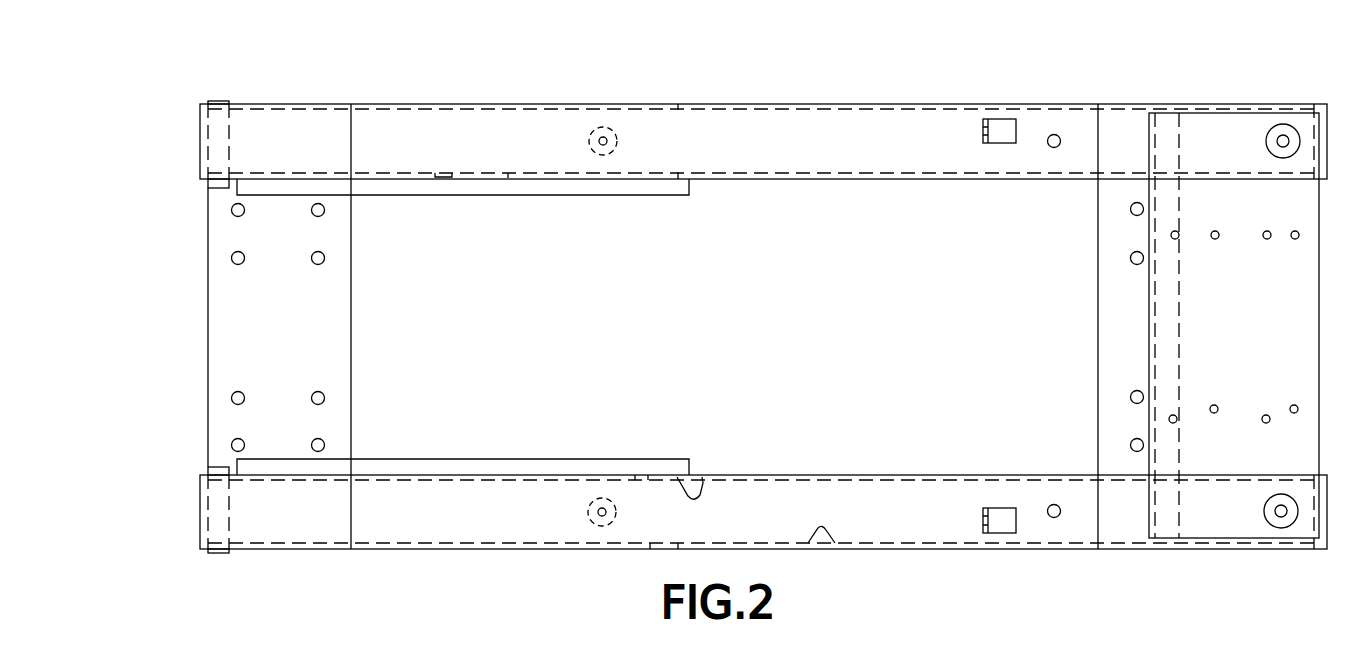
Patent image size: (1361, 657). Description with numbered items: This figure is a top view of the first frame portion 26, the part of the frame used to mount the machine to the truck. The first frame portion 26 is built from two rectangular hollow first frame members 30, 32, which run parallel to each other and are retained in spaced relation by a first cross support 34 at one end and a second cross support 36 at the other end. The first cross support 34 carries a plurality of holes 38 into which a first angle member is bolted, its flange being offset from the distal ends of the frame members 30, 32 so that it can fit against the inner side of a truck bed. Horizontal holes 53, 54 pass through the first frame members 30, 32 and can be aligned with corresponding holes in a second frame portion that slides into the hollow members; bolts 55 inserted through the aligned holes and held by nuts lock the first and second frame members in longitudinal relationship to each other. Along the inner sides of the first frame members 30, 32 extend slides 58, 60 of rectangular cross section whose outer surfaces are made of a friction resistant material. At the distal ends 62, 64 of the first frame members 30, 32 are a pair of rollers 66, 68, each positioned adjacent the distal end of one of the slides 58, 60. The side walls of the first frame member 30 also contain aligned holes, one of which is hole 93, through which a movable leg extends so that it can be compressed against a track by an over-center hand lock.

The first frame portion 26 is at (208, 282).
The first frame member 30 is at (553, 179).
The first frame member 32 is at (498, 549).
The first cross support 34 is at (208, 333).
The second cross support 36 is at (1320, 223).
The holes 38 is at (311, 256).
The hole 53 is at (604, 136).
The hole 54 is at (604, 507).
The bolts 55 is at (532, 653).
The slide 58 is at (402, 195).
The slide 60 is at (499, 458).
The distal end 62 is at (199, 132).
The distal end 64 is at (199, 512).
The roller 66 is at (206, 182).
The roller 68 is at (208, 469).
The hole 93 is at (703, 487).